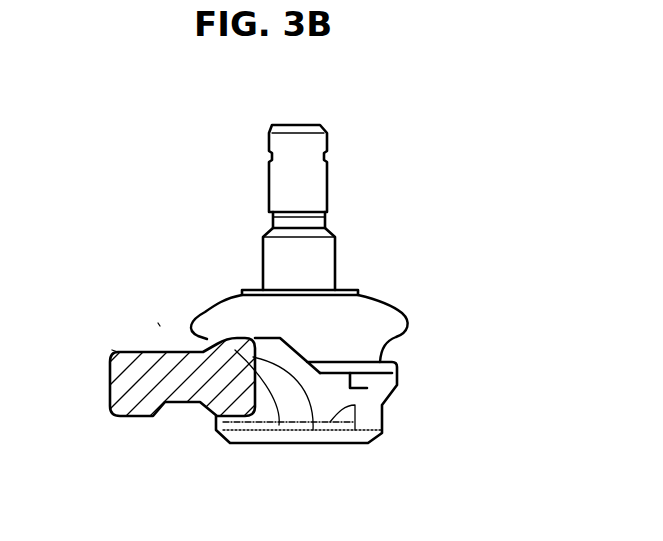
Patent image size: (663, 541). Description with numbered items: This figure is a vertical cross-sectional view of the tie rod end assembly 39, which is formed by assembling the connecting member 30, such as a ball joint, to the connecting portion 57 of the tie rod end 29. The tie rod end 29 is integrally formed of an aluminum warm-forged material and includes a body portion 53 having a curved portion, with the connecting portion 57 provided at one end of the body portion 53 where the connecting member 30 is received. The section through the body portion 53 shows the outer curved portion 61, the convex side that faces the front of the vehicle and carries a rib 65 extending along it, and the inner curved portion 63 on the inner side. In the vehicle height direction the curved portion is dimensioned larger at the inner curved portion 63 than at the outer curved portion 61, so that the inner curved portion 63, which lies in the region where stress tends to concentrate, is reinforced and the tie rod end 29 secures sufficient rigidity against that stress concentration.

The tie rod end 29 is at (164, 316).
The connecting member 30 is at (372, 320).
The tie rod end assembly 39 is at (401, 128).
The body portion 53 is at (112, 350).
The connecting portion 57 is at (373, 393).
The outer curved portion 61 is at (125, 382).
The inner curved portion 63 is at (279, 425).
The rib 65 is at (313, 430).